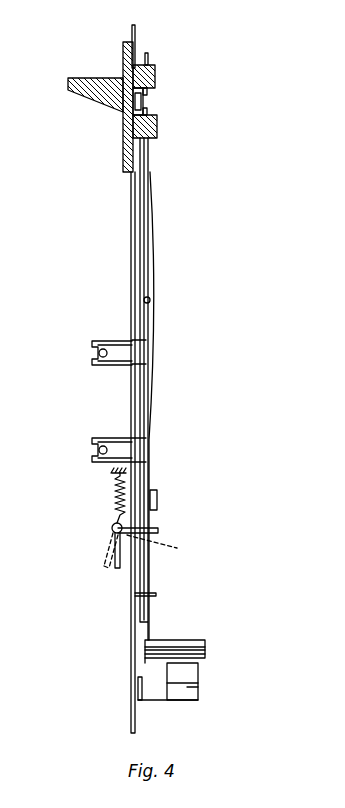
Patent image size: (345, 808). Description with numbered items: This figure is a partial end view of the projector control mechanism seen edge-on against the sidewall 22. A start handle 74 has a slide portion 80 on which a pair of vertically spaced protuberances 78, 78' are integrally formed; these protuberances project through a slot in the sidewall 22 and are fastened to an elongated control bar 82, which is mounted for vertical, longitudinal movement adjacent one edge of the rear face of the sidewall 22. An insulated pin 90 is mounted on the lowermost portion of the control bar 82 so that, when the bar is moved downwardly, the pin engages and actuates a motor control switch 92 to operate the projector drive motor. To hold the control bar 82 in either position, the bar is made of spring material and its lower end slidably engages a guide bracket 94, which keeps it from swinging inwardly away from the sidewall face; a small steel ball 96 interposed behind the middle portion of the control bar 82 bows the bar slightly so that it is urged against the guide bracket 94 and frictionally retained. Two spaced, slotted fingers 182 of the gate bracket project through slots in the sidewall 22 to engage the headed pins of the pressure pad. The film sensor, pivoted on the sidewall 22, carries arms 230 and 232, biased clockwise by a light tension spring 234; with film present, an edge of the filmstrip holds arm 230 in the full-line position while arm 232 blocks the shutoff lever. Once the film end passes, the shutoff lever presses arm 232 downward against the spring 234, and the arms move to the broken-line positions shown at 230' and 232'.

The sidewall 22 is at (131, 695).
The start handle 74 is at (74, 89).
The protuberance 78 is at (166, 124).
The protuberance 78' is at (168, 84).
The slide portion 80 is at (123, 52).
The control bar 82 is at (152, 210).
The insulated pin 90 is at (196, 642).
The motor control switch 92 is at (190, 686).
The guide bracket 94 is at (158, 492).
The steel ball 96 is at (150, 300).
The slotted fingers 182 is at (103, 438).
The sensor arm 230 is at (97, 563).
The sensor arm displaced position 230' is at (86, 550).
The sensor arm 232 is at (164, 520).
The sensor arm displaced position 232' is at (171, 548).
The tension spring 234 is at (115, 504).